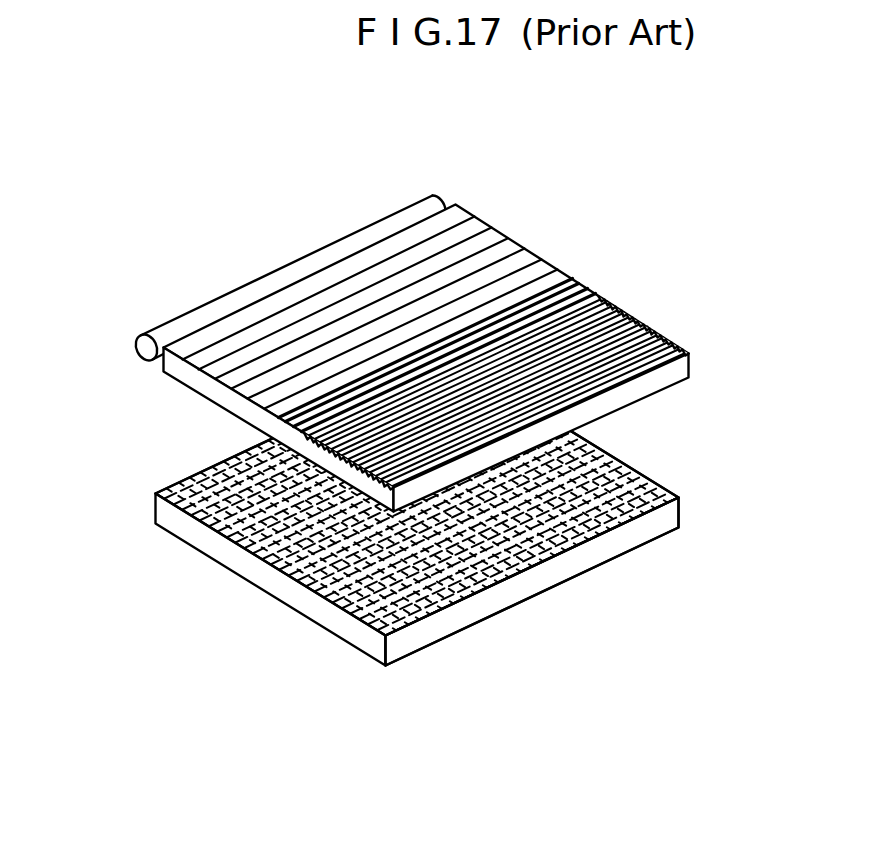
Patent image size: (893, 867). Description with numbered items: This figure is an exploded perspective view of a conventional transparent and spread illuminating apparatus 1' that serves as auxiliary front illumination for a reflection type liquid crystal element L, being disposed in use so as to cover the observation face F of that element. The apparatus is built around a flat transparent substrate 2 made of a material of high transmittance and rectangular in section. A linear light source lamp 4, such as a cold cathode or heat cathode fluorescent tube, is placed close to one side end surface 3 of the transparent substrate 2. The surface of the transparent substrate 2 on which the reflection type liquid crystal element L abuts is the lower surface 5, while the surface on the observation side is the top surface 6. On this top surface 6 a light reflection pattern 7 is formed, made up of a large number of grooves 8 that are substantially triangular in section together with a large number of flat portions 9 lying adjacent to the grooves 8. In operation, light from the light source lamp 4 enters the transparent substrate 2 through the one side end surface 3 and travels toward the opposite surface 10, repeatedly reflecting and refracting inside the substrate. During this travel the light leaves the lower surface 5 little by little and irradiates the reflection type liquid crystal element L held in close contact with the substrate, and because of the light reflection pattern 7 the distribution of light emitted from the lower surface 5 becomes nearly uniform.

The transparent and spread illuminating apparatus 1' is at (412, 383).
The transparent substrate 2 is at (173, 380).
The one side end surface 3 is at (160, 362).
The light source lamp 4 is at (285, 270).
The lower surface 5 is at (220, 412).
The top surface 6 is at (257, 347).
The light reflection pattern 7 is at (147, 633).
The grooves 8 is at (267, 562).
The flat portions 9 is at (283, 416).
The opposite surface 10 is at (648, 383).
The observation face F is at (540, 557).
The reflection type liquid crystal element L is at (475, 633).